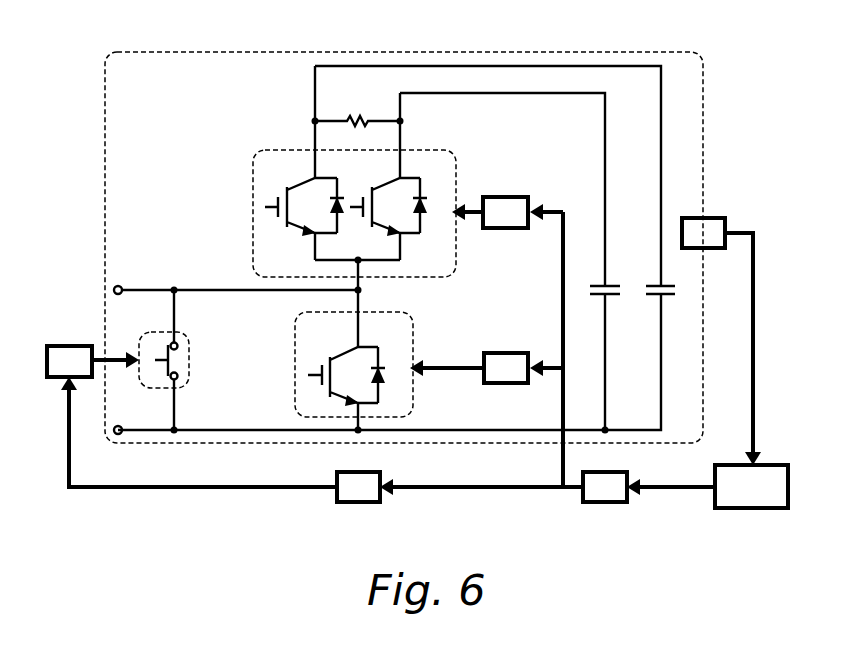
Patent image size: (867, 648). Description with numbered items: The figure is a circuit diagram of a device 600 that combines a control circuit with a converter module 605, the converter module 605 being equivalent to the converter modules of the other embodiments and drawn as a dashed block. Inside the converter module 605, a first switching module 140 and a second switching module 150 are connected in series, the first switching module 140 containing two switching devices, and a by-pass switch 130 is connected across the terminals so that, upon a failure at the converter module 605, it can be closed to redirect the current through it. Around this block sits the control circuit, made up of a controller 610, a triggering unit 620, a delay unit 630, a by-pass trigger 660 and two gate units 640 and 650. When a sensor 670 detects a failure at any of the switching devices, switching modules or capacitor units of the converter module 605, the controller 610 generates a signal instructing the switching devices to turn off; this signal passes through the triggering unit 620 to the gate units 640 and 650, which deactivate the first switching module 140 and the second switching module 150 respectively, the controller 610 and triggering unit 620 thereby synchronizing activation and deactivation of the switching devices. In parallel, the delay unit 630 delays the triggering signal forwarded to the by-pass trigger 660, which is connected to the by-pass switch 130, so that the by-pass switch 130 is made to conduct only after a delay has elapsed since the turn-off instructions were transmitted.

The device 600 is at (70, 64).
The converter module 605 is at (703, 107).
The by-pass switch 130 is at (189, 360).
The first switching module 140 is at (253, 192).
The second switching module 150 is at (295, 362).
The controller 610 is at (775, 465).
The triggering unit 620 is at (593, 502).
The delay unit 630 is at (348, 502).
The gate unit 640 is at (505, 353).
The gate unit 650 is at (505, 197).
The by-pass trigger 660 is at (67, 346).
The sensor 670 is at (718, 218).